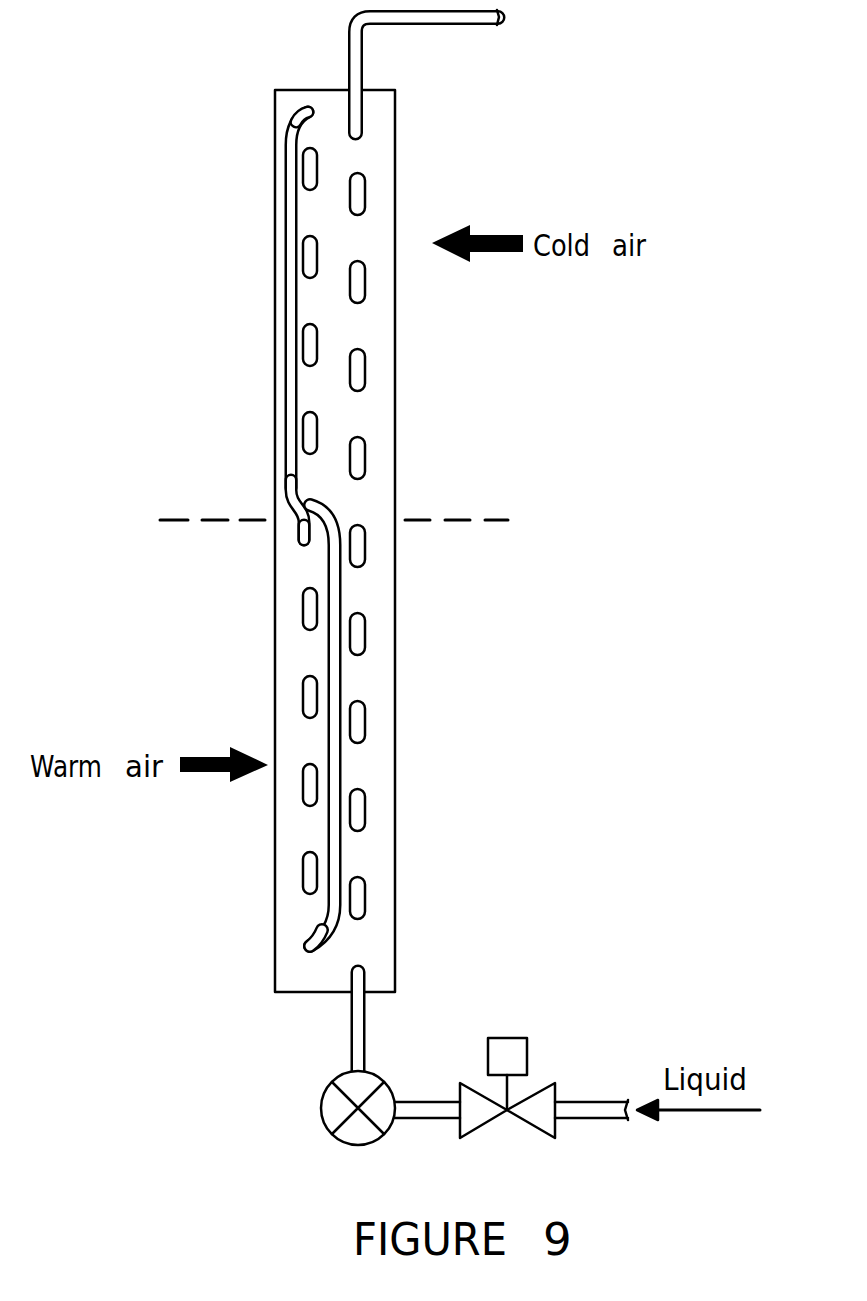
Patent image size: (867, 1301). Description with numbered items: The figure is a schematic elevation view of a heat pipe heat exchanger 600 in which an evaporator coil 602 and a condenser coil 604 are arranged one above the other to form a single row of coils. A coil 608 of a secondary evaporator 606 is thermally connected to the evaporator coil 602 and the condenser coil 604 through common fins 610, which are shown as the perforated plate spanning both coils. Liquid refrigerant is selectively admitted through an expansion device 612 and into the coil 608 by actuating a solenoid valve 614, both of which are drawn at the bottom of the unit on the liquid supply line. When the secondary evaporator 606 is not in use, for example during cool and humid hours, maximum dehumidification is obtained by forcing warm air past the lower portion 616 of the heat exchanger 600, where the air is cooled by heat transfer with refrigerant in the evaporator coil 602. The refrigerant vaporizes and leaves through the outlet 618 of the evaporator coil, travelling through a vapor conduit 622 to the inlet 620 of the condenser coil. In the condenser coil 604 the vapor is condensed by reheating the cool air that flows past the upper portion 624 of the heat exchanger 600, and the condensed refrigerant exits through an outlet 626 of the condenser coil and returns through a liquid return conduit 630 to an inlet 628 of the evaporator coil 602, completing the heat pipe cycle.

The heat pipe heat exchanger 600 is at (407, 708).
The evaporator coil 602 is at (305, 880).
The condenser coil 604 is at (303, 172).
The secondary evaporator 606 is at (373, 936).
The coil of secondary evaporator 608 is at (365, 199).
The common fins 610 is at (461, 302).
The expansion device 612 is at (373, 1084).
The solenoid valve 614 is at (540, 1093).
The lower portion of heat exchanger 616 is at (370, 586).
The outlet of evaporator coil 618 is at (303, 548).
The inlet of condenser coil 620 is at (303, 104).
The vapor conduit 622 is at (290, 307).
The upper portion of heat exchanger 624 is at (453, 375).
The outlet of condenser coil 626 is at (296, 473).
The inlet of evaporator coil 628 is at (303, 947).
The liquid return conduit 630 is at (337, 657).